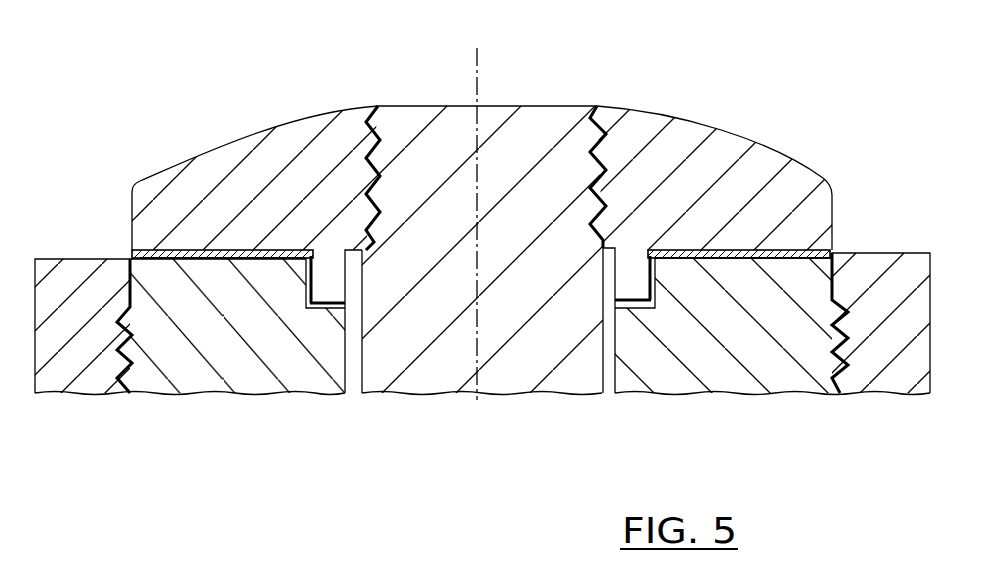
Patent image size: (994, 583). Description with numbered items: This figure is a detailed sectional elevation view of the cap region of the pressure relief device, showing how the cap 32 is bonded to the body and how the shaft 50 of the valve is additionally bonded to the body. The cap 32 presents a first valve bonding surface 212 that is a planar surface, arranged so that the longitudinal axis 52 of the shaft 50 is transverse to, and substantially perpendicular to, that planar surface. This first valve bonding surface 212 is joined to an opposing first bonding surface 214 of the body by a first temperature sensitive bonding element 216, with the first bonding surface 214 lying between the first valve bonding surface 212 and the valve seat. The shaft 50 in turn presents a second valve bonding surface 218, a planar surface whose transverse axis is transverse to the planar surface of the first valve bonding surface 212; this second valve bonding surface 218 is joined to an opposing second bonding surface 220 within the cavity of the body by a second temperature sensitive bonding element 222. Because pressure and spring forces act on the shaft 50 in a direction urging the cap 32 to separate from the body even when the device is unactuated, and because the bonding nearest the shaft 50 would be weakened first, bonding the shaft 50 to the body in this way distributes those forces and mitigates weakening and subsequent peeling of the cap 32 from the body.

The cap 32 is at (725, 132).
The shaft 50 is at (558, 353).
The longitudinal axis 52 is at (477, 72).
The first valve bonding surface 212 is at (129, 258).
The first bonding surface 214 is at (128, 258).
The first temperature sensitive bonding element 216 is at (258, 250).
The second valve bonding surface 218 is at (312, 298).
The second bonding surface 220 is at (308, 276).
The second temperature sensitive bonding element 222 is at (313, 263).